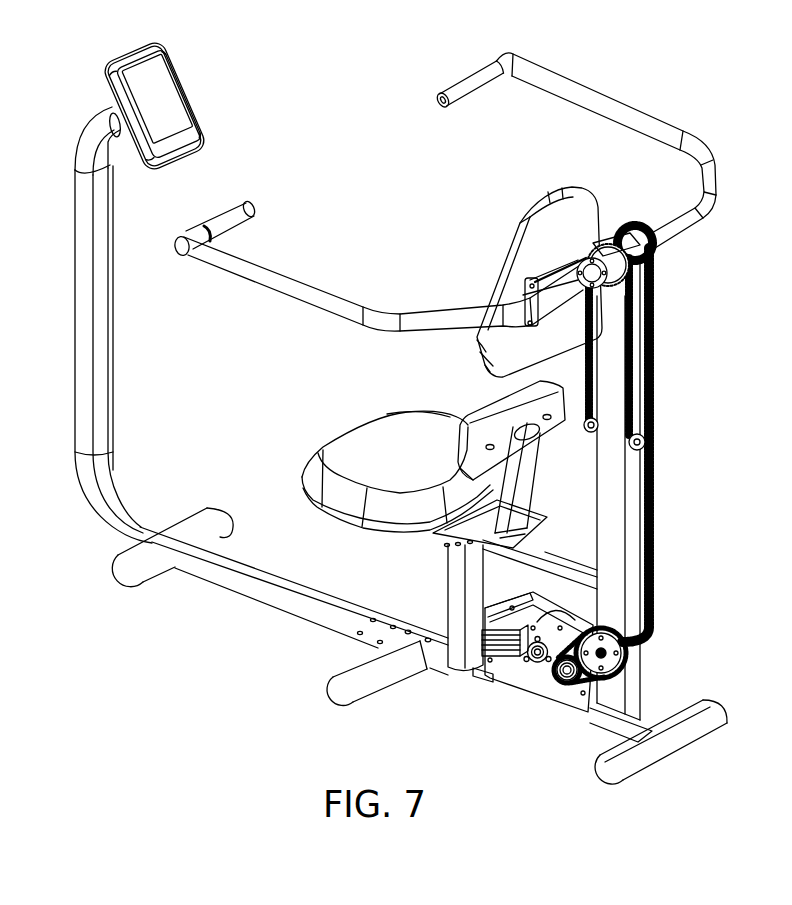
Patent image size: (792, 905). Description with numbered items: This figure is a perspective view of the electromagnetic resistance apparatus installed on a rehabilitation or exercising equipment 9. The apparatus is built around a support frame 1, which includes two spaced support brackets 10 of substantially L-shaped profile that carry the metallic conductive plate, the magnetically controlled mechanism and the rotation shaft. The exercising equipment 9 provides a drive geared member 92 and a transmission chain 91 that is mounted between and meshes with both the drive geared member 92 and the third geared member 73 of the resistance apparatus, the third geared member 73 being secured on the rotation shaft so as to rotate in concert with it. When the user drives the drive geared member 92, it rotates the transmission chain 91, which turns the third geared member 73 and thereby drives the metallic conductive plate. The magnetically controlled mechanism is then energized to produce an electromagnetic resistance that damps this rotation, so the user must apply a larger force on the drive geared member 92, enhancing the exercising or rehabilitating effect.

The support frame 1 is at (492, 714).
The rehabilitation or exercising equipment 9 is at (672, 492).
The support bracket 10 is at (515, 668).
The third geared member 73 is at (570, 680).
The transmission chain 91 is at (620, 656).
The drive geared member 92 is at (607, 650).